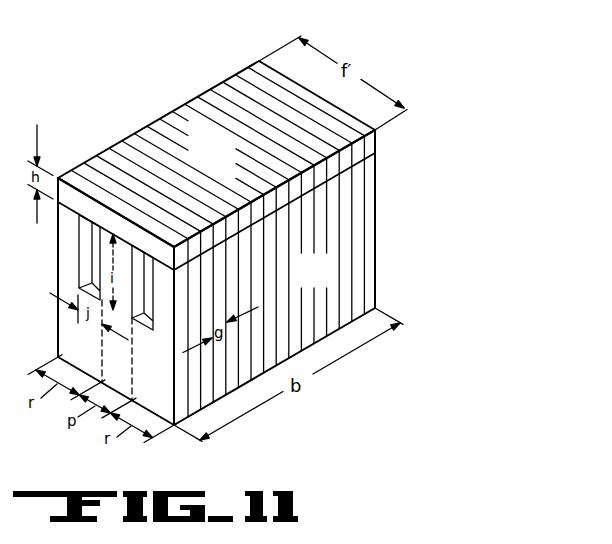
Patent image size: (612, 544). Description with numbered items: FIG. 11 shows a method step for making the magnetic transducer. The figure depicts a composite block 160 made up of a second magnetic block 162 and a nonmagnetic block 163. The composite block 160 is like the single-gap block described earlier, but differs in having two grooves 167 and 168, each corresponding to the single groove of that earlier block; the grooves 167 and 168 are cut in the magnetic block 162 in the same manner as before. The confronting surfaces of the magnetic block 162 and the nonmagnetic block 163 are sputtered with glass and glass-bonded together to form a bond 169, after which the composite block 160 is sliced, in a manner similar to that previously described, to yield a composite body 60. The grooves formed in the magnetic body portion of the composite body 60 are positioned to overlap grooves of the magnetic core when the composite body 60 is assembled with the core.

The composite body 60 is at (68, 172).
The composite block 160 is at (168, 96).
The second magnetic block 162 is at (328, 280).
The nonmagnetic block 163 is at (229, 157).
The groove 167 is at (151, 312).
The groove 168 is at (94, 268).
The bond 169 is at (377, 150).